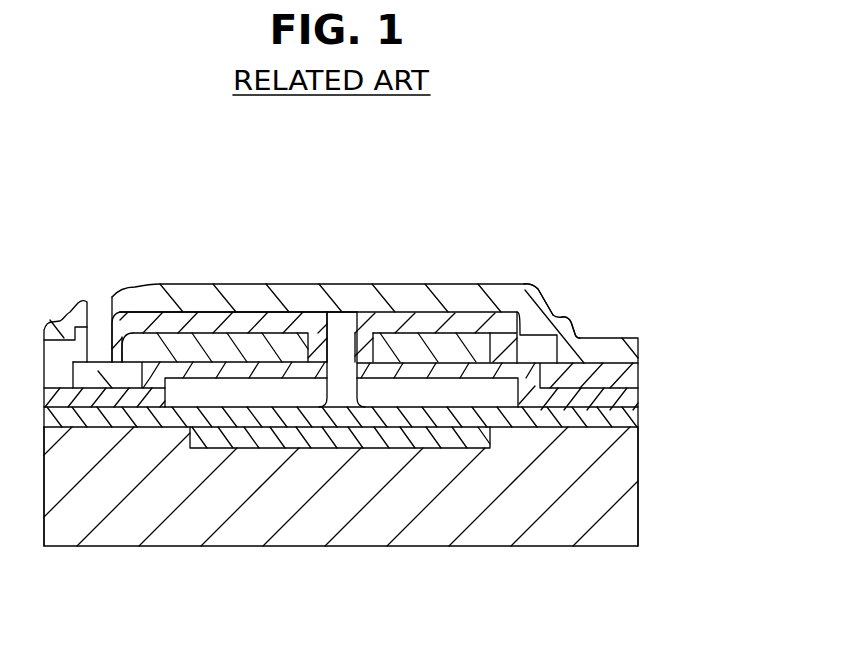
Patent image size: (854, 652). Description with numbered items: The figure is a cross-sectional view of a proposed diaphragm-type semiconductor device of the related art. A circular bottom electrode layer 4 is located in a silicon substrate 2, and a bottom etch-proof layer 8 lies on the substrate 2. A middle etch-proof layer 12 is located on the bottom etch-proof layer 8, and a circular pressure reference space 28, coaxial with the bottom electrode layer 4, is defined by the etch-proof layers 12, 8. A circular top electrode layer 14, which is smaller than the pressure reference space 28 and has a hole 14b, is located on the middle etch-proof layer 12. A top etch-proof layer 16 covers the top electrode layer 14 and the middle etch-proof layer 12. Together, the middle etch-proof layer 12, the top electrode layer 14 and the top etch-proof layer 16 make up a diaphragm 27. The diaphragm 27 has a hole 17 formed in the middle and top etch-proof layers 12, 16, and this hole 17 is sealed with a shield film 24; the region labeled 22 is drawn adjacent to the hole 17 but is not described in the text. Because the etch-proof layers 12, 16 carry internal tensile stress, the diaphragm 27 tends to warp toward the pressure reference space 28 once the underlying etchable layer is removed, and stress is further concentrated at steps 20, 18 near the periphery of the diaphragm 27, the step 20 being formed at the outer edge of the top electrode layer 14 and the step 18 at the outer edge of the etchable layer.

The silicon substrate 2 is at (630, 508).
The bottom electrode layer 4 is at (493, 445).
The bottom etch-proof layer 8 is at (630, 422).
The middle etch-proof layer 12 is at (630, 402).
The top electrode layer 14 is at (473, 347).
The hole 14b is at (372, 342).
The top etch-proof layer 16 is at (630, 380).
The hole 17 is at (357, 340).
The step 18 is at (599, 321).
The step 20 is at (558, 293).
The contact plug 22 is at (337, 327).
The shield film 24 is at (365, 302).
The diaphragm 27 is at (262, 273).
The pressure reference space 28 is at (225, 388).